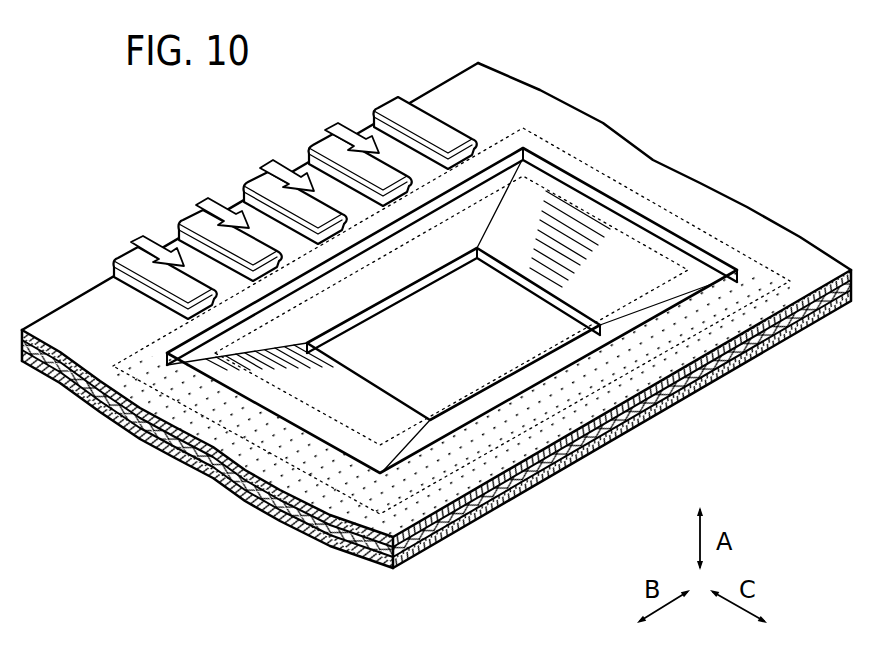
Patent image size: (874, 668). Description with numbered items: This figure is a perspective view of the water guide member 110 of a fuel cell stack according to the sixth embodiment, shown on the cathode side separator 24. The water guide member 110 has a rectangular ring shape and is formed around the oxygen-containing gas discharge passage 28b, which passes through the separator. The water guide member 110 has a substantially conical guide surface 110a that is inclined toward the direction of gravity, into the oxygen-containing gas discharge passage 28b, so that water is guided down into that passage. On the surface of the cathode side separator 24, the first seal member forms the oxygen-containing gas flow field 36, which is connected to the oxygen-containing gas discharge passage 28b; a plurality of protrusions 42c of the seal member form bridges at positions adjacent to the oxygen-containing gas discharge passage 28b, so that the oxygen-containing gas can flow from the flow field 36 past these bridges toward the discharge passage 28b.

The cathode side separator 24 is at (436, 315).
The oxygen-containing gas flow field 36 is at (247, 194).
The protrusions 42c is at (295, 177).
The water guide member 110 is at (452, 269).
The guide surface 110a is at (453, 255).
The oxygen-containing gas discharge passage 28b is at (453, 322).